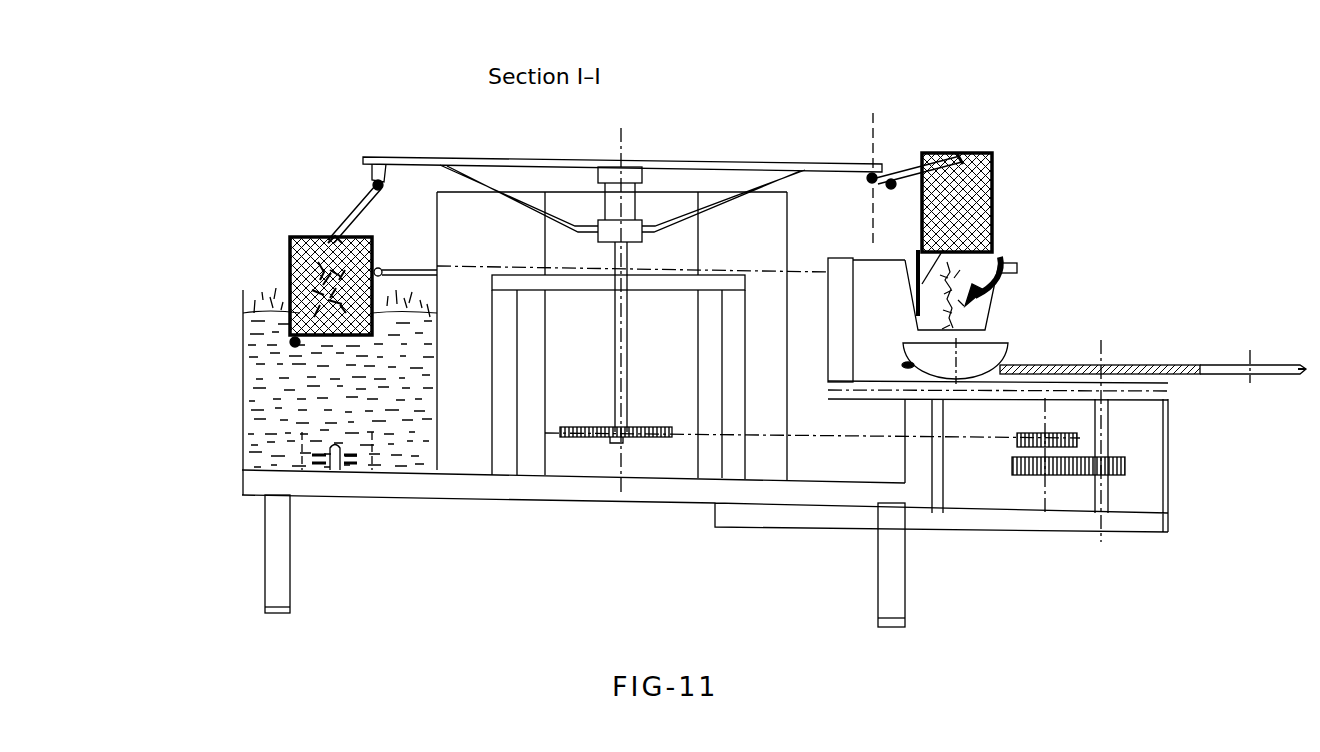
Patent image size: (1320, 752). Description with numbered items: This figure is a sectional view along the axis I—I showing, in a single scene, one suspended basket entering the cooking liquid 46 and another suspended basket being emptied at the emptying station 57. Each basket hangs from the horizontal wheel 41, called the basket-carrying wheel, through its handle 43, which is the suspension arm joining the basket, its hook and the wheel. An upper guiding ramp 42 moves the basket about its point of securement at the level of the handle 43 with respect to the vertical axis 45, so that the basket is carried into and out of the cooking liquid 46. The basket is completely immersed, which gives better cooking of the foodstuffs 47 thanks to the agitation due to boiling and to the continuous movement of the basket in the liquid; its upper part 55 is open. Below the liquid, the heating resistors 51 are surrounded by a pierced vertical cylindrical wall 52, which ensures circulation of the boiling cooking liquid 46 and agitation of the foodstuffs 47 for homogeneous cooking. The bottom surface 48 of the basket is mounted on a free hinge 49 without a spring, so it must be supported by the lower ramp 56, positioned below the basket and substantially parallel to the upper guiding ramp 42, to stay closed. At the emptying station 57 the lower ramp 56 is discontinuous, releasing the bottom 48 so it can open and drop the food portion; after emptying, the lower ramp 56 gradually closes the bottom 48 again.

The horizontal wheel 41 is at (760, 158).
The upper guiding ramp 42 is at (388, 162).
The handle 43 is at (910, 162).
The vertical axis 45 is at (876, 145).
The cooking liquid 46 is at (263, 373).
The foodstuffs 47 is at (290, 243).
The bottom surface 48 is at (330, 338).
The hinge 49 is at (918, 252).
The heating resistors 51 is at (300, 470).
The pierced vertical cylindrical wall 52 is at (300, 452).
The upper part 55 is at (322, 238).
The lower ramp 56 is at (290, 338).
The emptying station 57 is at (992, 300).